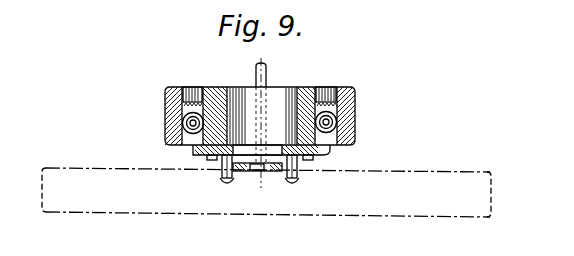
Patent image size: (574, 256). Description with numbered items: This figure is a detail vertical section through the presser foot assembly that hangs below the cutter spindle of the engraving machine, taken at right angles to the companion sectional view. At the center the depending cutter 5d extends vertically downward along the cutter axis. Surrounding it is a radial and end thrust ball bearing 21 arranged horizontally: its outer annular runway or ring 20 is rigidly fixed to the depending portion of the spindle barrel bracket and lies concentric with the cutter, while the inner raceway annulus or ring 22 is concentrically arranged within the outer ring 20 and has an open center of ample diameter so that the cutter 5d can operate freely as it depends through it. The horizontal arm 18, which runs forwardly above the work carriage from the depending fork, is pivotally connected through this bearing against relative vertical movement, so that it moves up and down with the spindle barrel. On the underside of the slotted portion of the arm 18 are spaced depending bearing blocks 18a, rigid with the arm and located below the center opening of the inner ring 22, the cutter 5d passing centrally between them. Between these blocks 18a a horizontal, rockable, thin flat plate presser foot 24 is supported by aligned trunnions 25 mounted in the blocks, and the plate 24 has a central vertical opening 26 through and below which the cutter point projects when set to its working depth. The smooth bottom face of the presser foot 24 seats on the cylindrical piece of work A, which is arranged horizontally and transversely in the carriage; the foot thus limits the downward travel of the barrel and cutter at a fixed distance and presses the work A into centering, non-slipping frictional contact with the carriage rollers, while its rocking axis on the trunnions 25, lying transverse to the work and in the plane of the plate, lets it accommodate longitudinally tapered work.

The cutter 5d is at (266, 72).
The horizontal arm 18 is at (332, 156).
The depending bearing blocks 18a is at (222, 162).
The outer annular runway or ring 20 is at (167, 111).
The radial and end thrust ball bearing 21 is at (357, 88).
The inner raceway annulus or ring 22 is at (222, 74).
The presser foot 24 is at (274, 171).
The trunnions 25 is at (258, 172).
The central vertical opening 26 is at (263, 171).
The piece of work A is at (432, 182).